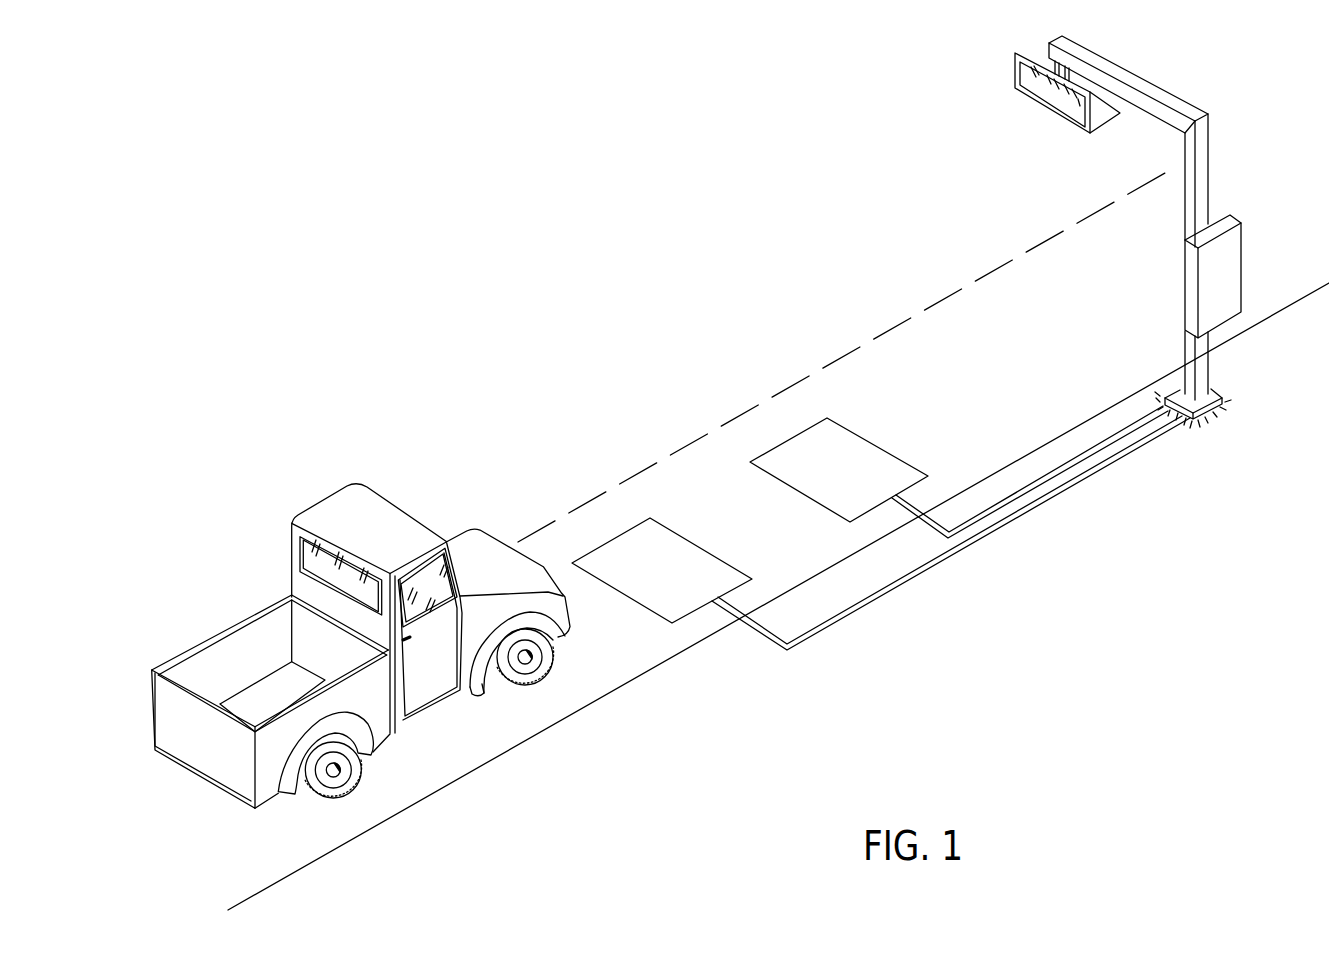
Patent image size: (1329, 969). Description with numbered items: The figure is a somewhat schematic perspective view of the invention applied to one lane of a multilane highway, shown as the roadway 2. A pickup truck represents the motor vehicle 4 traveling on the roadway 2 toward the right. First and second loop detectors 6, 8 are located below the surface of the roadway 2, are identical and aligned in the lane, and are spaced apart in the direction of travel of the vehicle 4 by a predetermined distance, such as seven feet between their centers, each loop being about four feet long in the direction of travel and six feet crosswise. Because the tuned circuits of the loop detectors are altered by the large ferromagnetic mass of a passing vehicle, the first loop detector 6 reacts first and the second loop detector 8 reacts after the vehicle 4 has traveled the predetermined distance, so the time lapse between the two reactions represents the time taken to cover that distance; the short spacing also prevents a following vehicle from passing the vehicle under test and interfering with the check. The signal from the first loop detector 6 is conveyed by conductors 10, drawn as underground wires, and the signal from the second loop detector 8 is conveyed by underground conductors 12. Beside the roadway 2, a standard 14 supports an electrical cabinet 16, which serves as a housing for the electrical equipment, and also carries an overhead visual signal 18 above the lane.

The roadway 2 is at (622, 681).
The motor vehicle 4 is at (352, 500).
The first loop detector 6 is at (740, 578).
The second loop detector 8 is at (885, 458).
The conductors 10 is at (815, 628).
The conductors 12 is at (1057, 476).
The standard 14 is at (1204, 182).
The electrical cabinet 16 is at (1236, 252).
The overhead visual signal 18 is at (1073, 124).